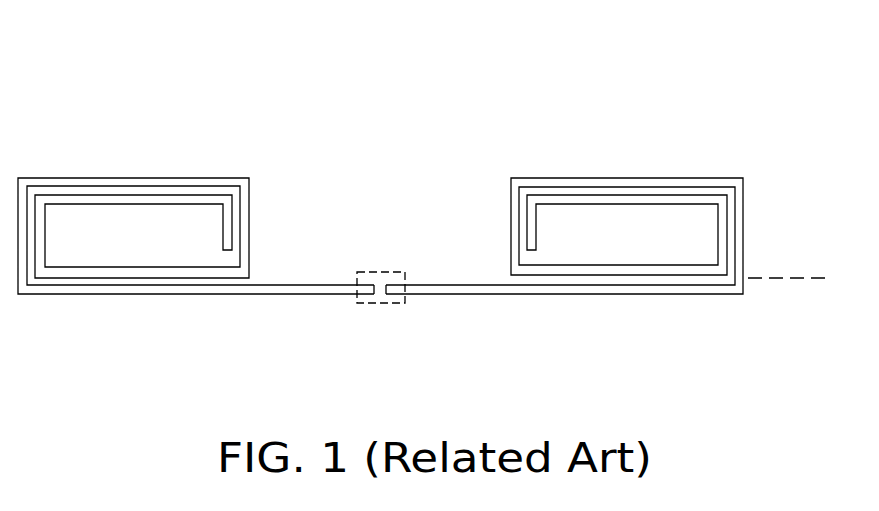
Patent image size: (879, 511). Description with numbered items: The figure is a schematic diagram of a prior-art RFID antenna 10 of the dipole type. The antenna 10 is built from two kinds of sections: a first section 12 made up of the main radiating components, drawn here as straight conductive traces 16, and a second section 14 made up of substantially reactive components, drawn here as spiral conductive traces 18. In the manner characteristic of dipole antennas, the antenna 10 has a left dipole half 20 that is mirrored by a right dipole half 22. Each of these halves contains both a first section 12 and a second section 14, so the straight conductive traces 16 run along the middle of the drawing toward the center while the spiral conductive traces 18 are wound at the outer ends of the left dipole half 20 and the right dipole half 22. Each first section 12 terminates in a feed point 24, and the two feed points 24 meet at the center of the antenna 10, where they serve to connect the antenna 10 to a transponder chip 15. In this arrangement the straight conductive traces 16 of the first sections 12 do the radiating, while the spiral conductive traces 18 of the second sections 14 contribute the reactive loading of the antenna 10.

The antenna 10 is at (353, 77).
The first section 12 is at (753, 288).
The second section 14 is at (758, 232).
The transponder chip 15 is at (397, 305).
The straight conductive traces 16 is at (322, 285).
The spiral conductive traces 18 is at (131, 178).
The left dipole half 20 is at (260, 158).
The right dipole half 22 is at (502, 160).
The feed point 24 is at (390, 293).